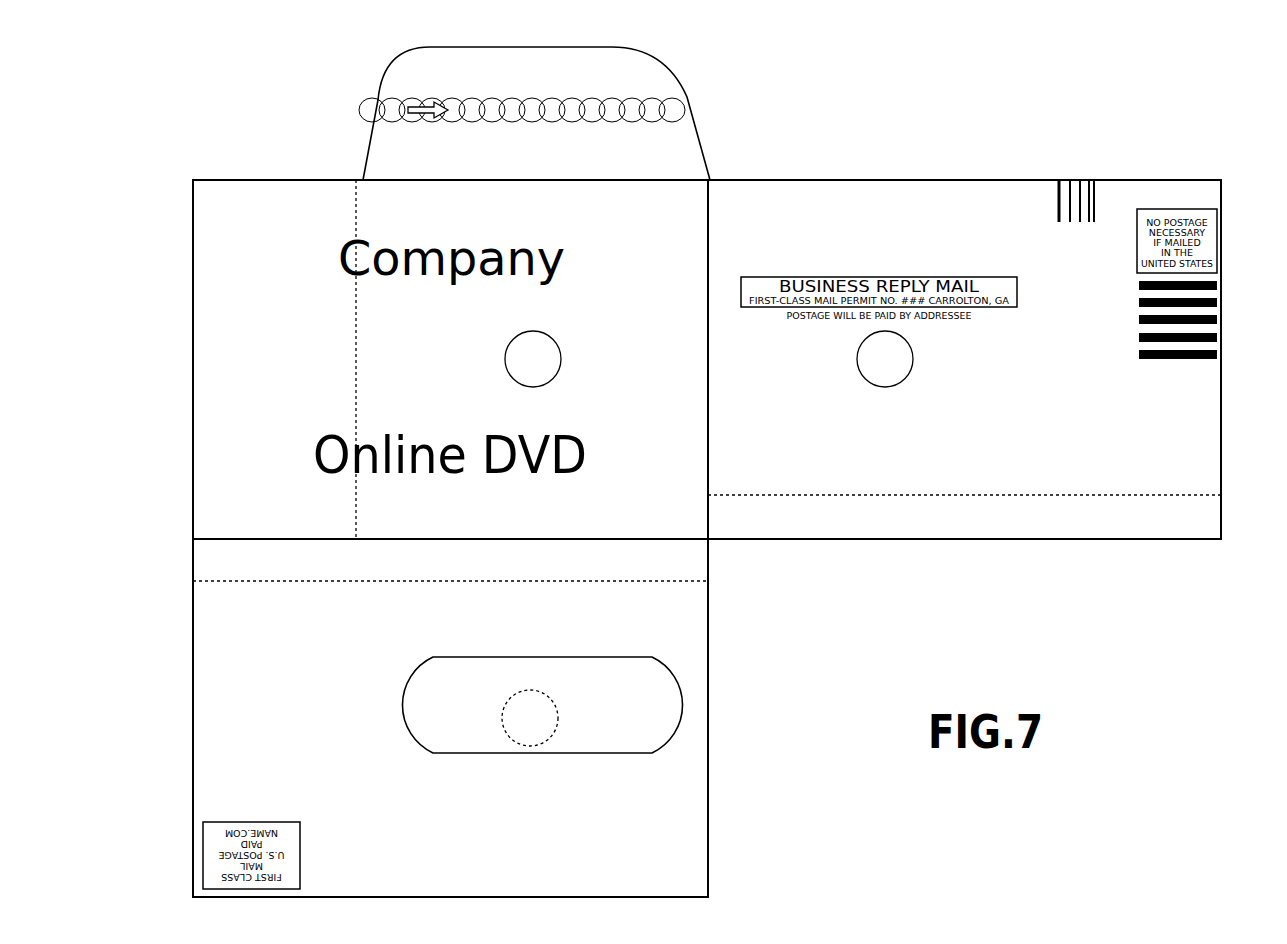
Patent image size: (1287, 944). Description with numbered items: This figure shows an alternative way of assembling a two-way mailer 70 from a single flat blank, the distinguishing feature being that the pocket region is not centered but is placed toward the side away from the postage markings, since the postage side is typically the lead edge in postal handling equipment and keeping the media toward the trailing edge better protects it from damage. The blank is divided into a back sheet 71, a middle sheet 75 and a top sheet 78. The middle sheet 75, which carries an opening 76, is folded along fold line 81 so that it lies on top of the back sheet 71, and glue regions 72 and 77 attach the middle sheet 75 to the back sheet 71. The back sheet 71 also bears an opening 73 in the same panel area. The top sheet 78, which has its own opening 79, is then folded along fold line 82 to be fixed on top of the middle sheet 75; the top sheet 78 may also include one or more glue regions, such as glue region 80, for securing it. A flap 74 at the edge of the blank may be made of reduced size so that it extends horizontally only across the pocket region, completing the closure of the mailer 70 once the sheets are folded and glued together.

The DVD mailer envelope 70 is at (868, 120).
The back sheet 71 is at (403, 192).
The glue region 72 is at (238, 200).
The thumb hole 73 is at (543, 338).
The flap 74 is at (590, 60).
The middle sheet 75 is at (1190, 417).
The opening 76 is at (910, 358).
The glue region 77 is at (1085, 520).
The top sheet 78 is at (677, 812).
The opening 79 is at (655, 692).
The glue region 80 is at (680, 560).
The fold line 81 is at (710, 212).
The fold line 82 is at (232, 542).